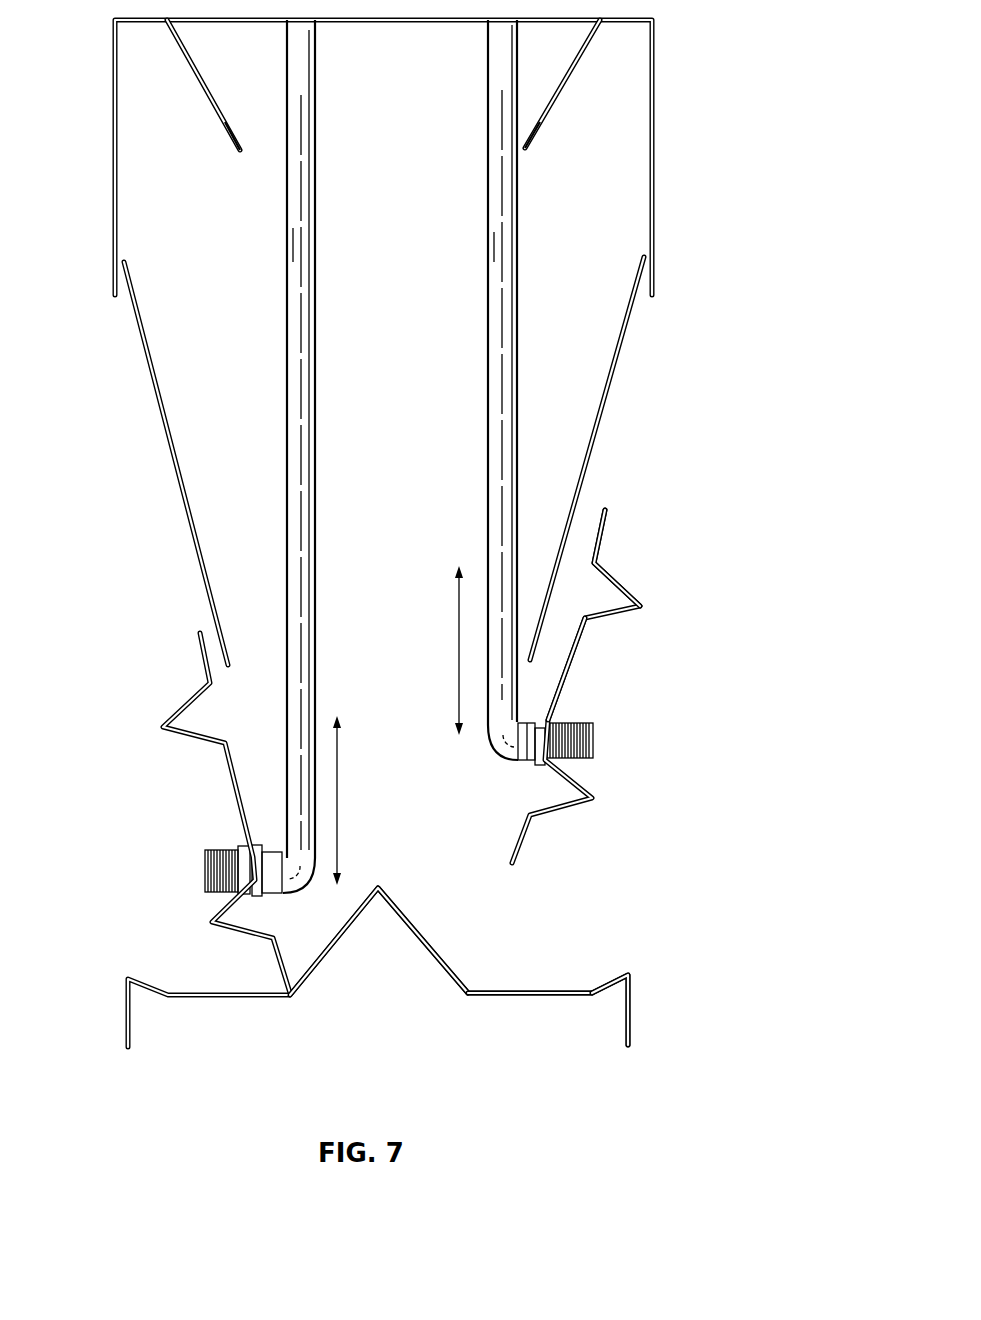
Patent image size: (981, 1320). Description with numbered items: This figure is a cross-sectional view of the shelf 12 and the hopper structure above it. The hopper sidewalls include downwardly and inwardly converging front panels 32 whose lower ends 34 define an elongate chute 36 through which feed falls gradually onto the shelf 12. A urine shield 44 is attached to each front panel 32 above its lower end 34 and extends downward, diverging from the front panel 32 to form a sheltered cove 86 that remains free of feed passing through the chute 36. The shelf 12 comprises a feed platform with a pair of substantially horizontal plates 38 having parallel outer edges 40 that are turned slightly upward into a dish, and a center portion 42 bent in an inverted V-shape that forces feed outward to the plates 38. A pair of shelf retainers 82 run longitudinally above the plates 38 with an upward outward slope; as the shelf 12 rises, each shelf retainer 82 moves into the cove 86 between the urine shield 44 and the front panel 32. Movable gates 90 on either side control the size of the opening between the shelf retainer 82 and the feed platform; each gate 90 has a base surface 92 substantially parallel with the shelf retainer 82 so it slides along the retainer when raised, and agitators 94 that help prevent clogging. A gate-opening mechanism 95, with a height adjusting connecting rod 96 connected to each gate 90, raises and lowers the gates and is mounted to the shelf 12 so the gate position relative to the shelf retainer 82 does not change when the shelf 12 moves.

The shelf 12 is at (419, 987).
The front panel 32 is at (205, 78).
The lower end 34 is at (218, 128).
The chute 36 is at (407, 128).
The horizontal plate 38 is at (512, 993).
The outer edge 40 is at (628, 973).
The center portion 42 is at (430, 940).
The urine shield 44 is at (652, 181).
The shelf retainer 82 is at (603, 423).
The cove 86 is at (605, 171).
The gate 90 is at (615, 686).
The base surface 92 is at (570, 678).
The agitator 94 is at (617, 578).
The gate-opening mechanism 95 is at (535, 409).
The height adjusting connecting rod 96 is at (485, 330).